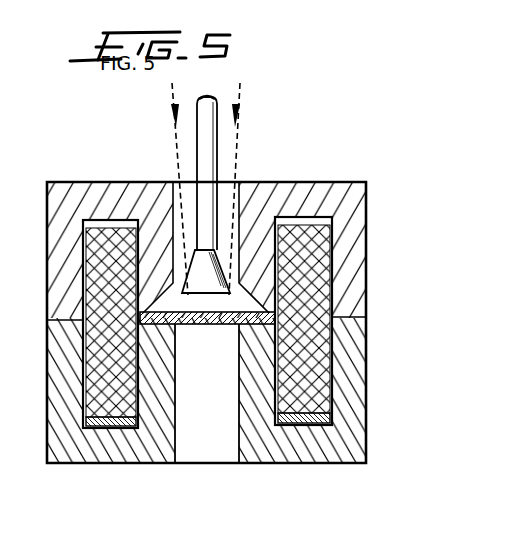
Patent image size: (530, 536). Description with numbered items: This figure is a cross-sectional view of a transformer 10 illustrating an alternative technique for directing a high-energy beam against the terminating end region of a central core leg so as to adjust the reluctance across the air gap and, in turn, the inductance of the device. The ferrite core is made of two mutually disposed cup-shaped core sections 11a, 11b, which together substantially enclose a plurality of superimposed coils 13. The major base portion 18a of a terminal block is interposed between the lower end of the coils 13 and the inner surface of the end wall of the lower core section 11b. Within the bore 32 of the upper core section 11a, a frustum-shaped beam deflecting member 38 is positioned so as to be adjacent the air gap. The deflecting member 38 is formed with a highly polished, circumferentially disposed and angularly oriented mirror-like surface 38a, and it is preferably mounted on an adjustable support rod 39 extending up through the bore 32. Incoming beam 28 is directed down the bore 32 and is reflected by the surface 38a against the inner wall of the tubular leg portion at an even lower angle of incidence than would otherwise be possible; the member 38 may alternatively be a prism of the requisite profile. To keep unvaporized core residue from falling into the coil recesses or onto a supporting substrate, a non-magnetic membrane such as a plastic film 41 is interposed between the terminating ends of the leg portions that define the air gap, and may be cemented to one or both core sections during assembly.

The transformer 10 is at (220, 293).
The core section 11a is at (391, 119).
The core section 11b is at (206, 390).
The coils 13 is at (82, 345).
The major base portion 18a is at (118, 428).
The laser beam 28 is at (171, 104).
The bore 32 is at (190, 182).
The beam deflecting member 38 is at (182, 277).
The mirror-like surface 38a is at (204, 278).
The adjustable support rod 39 is at (216, 156).
The plastic film 41 is at (238, 327).